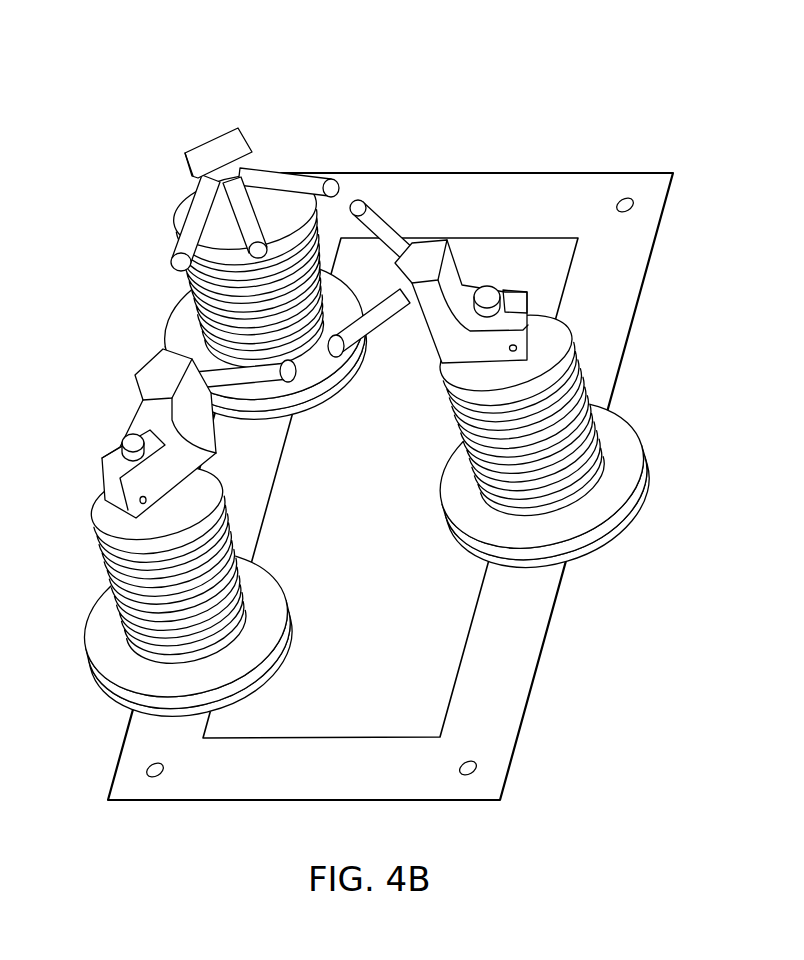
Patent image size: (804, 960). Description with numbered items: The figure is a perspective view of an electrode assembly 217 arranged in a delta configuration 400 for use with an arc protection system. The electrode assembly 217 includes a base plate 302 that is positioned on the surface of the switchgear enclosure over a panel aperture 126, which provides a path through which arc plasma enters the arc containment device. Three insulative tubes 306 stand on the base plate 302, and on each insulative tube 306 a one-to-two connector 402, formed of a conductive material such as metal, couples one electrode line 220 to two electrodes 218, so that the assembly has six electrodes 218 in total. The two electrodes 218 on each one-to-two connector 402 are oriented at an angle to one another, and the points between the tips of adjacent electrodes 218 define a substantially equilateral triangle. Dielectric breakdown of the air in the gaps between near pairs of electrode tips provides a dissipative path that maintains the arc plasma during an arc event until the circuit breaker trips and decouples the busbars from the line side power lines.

The delta configuration 400 is at (355, 407).
The one-to-two connector 402 is at (215, 150).
The electrode 218 is at (375, 226).
The electrode line 220 is at (131, 440).
The panel aperture 126 is at (413, 479).
The electrode assembly 217 is at (374, 508).
The insulative tube 306 is at (497, 505).
The base plate 302 is at (487, 738).